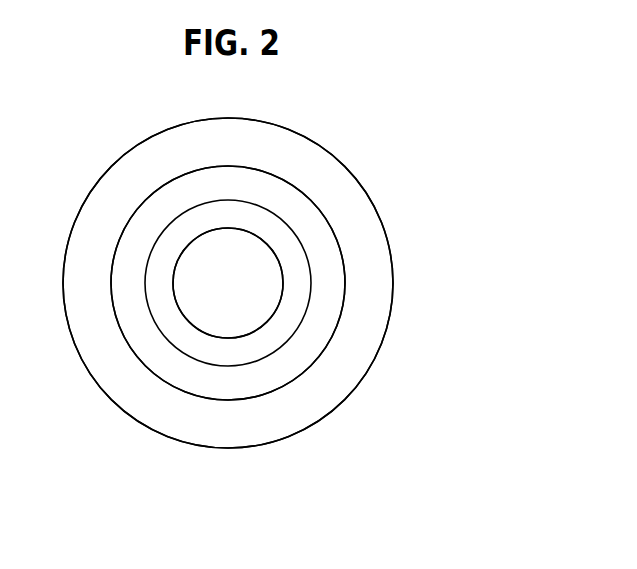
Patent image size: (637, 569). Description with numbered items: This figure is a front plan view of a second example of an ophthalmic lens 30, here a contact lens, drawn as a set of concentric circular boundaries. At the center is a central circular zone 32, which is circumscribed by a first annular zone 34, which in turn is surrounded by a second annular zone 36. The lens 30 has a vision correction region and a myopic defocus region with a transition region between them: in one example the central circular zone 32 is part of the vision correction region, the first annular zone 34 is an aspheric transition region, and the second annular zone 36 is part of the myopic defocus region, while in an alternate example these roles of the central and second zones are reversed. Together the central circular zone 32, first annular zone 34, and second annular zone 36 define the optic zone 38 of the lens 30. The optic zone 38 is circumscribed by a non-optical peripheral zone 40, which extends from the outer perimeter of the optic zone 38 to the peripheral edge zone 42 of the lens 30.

The ophthalmic lens 30 is at (360, 152).
The central circular zone 32 is at (250, 275).
The first annular zone 34 is at (290, 292).
The second annular zone 36 is at (313, 338).
The optic zone 38 is at (300, 380).
The non-optical peripheral zone 40 is at (203, 430).
The peripheral edge zone 42 is at (258, 450).